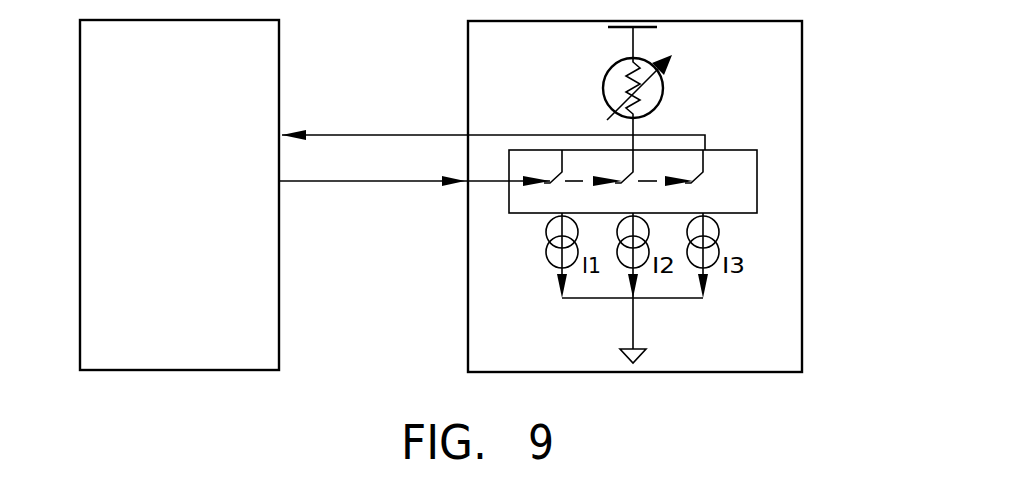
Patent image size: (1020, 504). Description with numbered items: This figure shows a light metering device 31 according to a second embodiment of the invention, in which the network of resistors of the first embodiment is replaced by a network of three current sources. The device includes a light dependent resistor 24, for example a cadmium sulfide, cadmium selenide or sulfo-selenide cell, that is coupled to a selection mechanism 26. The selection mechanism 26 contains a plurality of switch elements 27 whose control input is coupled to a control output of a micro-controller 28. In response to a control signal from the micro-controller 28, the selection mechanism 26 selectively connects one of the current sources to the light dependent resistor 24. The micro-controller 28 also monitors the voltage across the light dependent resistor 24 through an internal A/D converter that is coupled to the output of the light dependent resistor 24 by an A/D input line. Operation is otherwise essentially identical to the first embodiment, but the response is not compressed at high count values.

The micro-controller 28 is at (80, 48).
The light dependent resistor 24 is at (603, 90).
The selection mechanism 26 is at (643, 208).
The switch elements 27 is at (722, 193).
The light metering device 31 is at (802, 200).